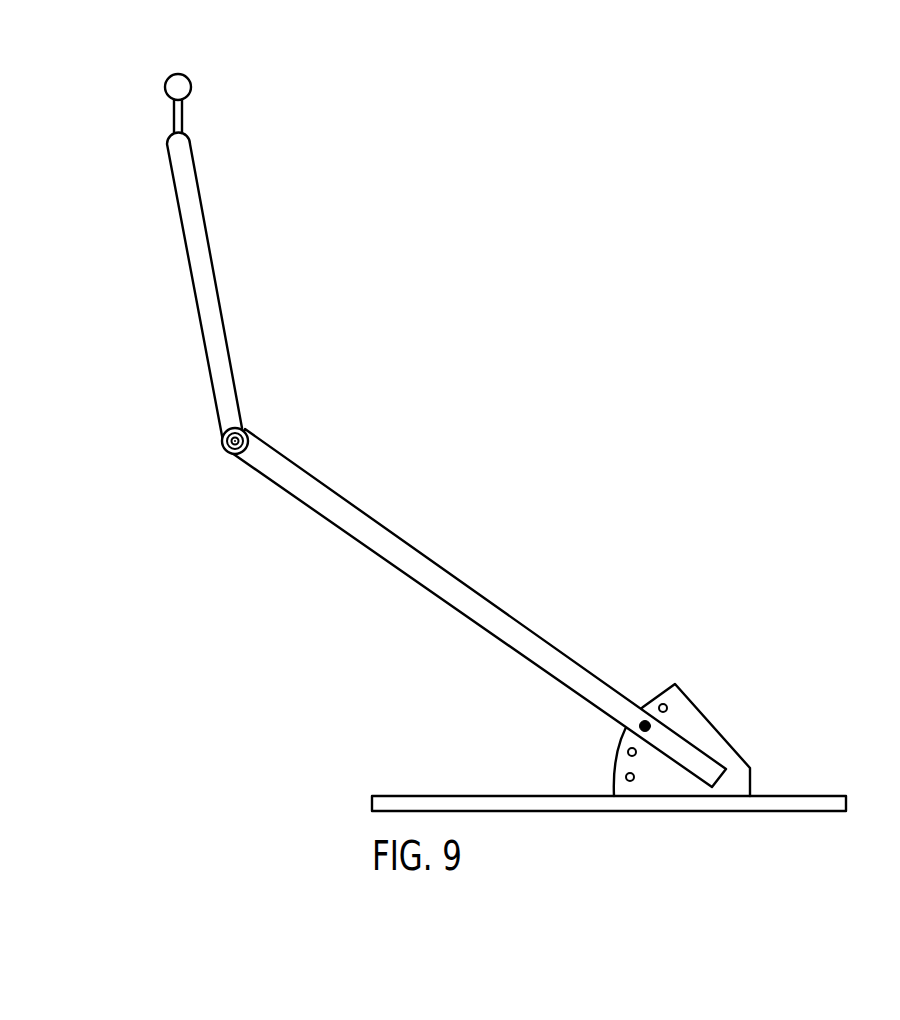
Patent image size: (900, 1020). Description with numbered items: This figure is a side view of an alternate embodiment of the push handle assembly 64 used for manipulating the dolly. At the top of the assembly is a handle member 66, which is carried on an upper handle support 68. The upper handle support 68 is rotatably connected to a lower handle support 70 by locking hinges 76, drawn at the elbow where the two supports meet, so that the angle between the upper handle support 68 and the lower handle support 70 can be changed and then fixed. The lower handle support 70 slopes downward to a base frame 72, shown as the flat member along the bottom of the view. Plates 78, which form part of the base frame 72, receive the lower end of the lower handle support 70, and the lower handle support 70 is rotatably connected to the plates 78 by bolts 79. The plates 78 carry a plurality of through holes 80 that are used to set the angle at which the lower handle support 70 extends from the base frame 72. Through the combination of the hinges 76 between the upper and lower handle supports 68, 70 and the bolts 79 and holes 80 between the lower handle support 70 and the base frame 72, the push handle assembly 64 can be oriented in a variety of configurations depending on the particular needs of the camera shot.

The push handle assembly 64 is at (383, 360).
The handle member 66 is at (190, 82).
The upper handle support 68 is at (205, 220).
The lower handle support 70 is at (405, 543).
The base frame 72 is at (450, 797).
The locking hinges 76 is at (243, 428).
The plates 78 is at (750, 771).
The bolts 79 is at (650, 725).
The through holes 80 is at (650, 704).